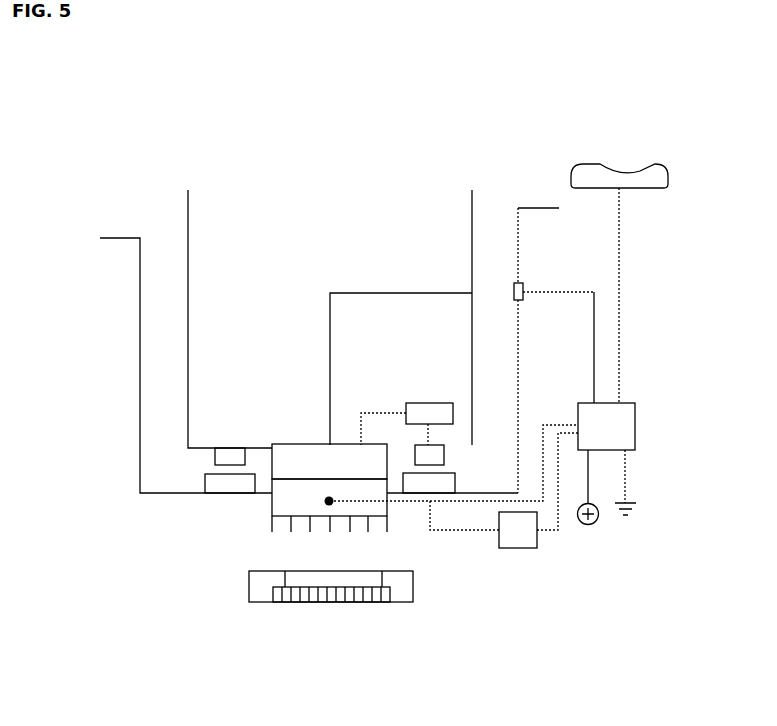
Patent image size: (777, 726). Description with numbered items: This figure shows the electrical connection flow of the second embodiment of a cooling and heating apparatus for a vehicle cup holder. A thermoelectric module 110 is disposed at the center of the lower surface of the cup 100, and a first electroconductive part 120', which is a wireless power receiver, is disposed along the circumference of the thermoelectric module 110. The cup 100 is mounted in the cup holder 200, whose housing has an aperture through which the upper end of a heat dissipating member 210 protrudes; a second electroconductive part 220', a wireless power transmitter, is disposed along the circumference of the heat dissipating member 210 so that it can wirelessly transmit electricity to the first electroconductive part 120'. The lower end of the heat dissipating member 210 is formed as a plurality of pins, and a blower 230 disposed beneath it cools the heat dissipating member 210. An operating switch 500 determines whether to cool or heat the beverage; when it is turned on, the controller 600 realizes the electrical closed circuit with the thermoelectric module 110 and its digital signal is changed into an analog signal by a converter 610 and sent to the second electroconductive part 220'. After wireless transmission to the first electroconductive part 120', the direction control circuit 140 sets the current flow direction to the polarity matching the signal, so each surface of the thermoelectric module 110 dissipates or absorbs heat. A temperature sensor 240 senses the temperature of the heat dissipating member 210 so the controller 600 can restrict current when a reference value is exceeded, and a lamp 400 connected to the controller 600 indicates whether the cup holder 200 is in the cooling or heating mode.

The cup 100 is at (188, 218).
The thermoelectric module 110 is at (303, 443).
The first electroconductive part 120' is at (256, 435).
The direction control circuit 140 is at (428, 420).
The cup holder 200 is at (136, 355).
The heat dissipating member 210 is at (270, 505).
The second electroconductive part 220' is at (250, 493).
The blower 230 is at (263, 590).
The temperature sensor 240 is at (333, 505).
The lamp 400 is at (516, 283).
The operating switch 500 is at (652, 172).
The controller 600 is at (623, 427).
The converter 610 is at (520, 535).